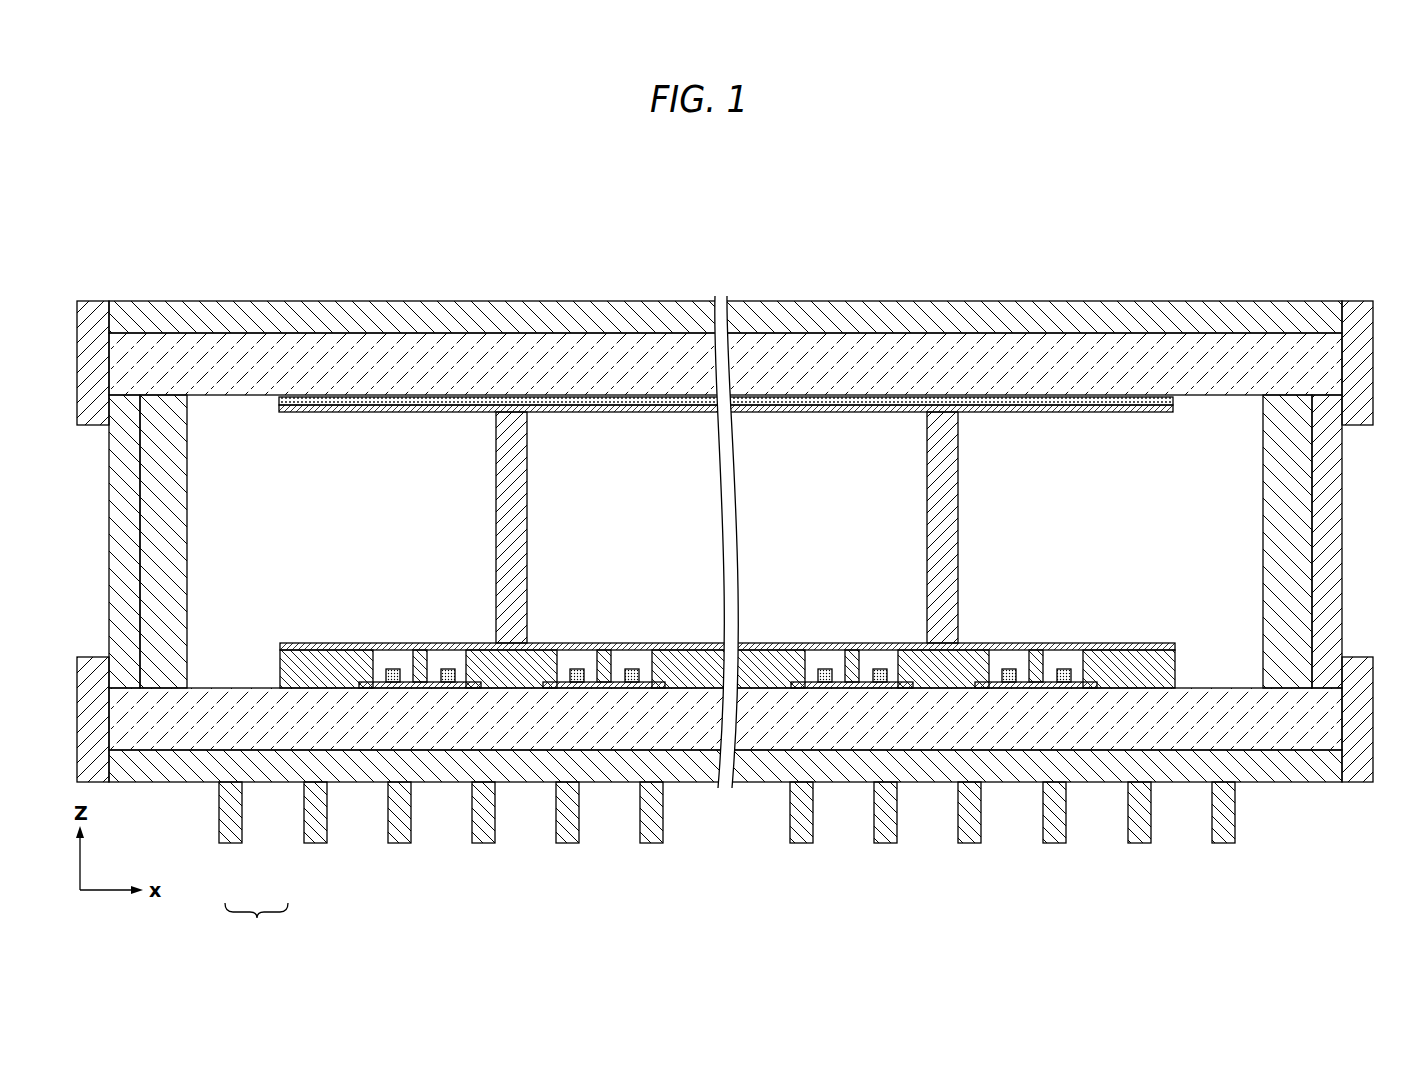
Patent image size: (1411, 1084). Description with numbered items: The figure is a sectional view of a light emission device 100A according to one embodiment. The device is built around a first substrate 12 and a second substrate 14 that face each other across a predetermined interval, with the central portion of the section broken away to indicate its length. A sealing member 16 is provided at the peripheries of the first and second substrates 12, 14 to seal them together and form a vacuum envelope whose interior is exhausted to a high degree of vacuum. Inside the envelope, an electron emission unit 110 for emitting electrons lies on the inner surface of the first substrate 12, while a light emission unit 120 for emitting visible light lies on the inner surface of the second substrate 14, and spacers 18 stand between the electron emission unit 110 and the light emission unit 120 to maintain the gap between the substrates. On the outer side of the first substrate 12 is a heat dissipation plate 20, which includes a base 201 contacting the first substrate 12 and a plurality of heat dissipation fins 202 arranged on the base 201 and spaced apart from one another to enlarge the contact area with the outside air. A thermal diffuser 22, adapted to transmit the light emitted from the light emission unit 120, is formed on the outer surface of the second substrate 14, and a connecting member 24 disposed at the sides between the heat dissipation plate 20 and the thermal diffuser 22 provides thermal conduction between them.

The light emission device 100A is at (249, 248).
The first substrate 12 is at (1278, 738).
The second substrate 14 is at (1150, 352).
The sealing member 16 is at (1290, 493).
The spacers 18 is at (936, 518).
The heat dissipation plate 20 is at (256, 924).
The base 201 is at (275, 770).
The heat dissipation fins 202 is at (232, 833).
The thermal diffuser 22 is at (965, 318).
The connecting member 24 is at (1328, 563).
The electron emission unit 110 is at (1037, 624).
The light emission unit 120 is at (997, 432).